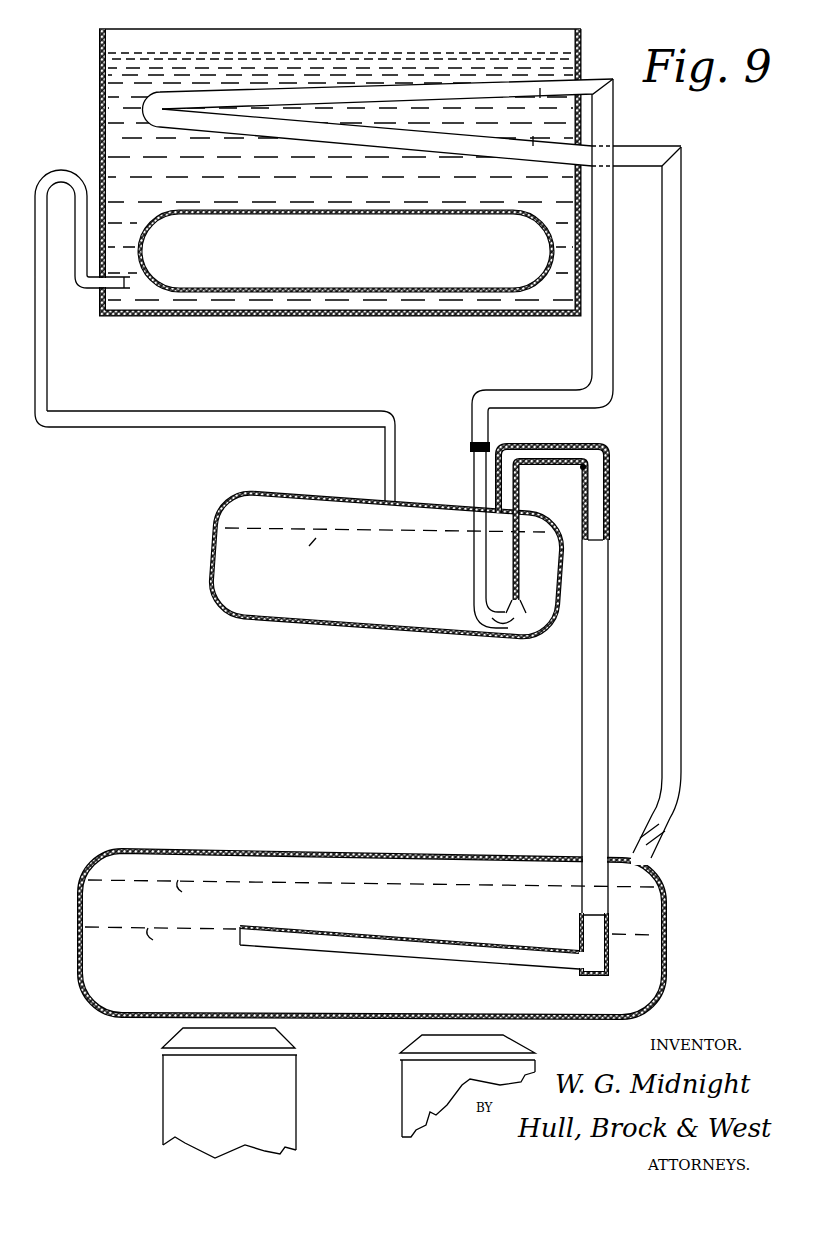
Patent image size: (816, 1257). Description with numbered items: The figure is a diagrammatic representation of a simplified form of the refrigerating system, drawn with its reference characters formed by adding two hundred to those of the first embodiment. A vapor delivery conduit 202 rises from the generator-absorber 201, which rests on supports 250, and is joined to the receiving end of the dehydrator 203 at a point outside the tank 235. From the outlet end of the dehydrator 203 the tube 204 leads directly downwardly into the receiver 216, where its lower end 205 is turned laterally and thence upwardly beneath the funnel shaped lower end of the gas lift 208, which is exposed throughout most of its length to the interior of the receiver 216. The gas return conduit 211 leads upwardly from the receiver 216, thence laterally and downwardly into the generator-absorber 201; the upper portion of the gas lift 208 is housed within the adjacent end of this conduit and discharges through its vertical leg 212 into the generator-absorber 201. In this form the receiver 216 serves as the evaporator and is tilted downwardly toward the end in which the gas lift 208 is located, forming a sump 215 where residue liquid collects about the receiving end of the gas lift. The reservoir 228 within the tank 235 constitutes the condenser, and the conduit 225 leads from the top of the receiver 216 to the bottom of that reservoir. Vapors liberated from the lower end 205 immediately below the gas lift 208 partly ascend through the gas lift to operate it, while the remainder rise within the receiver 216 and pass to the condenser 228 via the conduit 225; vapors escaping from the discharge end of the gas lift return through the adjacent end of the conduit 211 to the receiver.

The generator-absorber 201 is at (384, 851).
The vapor delivery conduit 202 is at (682, 548).
The dehydrator 203 is at (420, 127).
The tube 204 is at (613, 125).
The lower end of tube 205 is at (473, 590).
The gas lift 208 is at (513, 490).
The gas return conduit 211 is at (582, 732).
The vertical leg of gas return conduit 212 is at (430, 938).
The sump 215 is at (385, 590).
The receiver 216 is at (215, 572).
The conduit 225 is at (209, 416).
The reservoir 228 is at (346, 238).
The tank 235 is at (99, 103).
The support 250 is at (412, 1087).